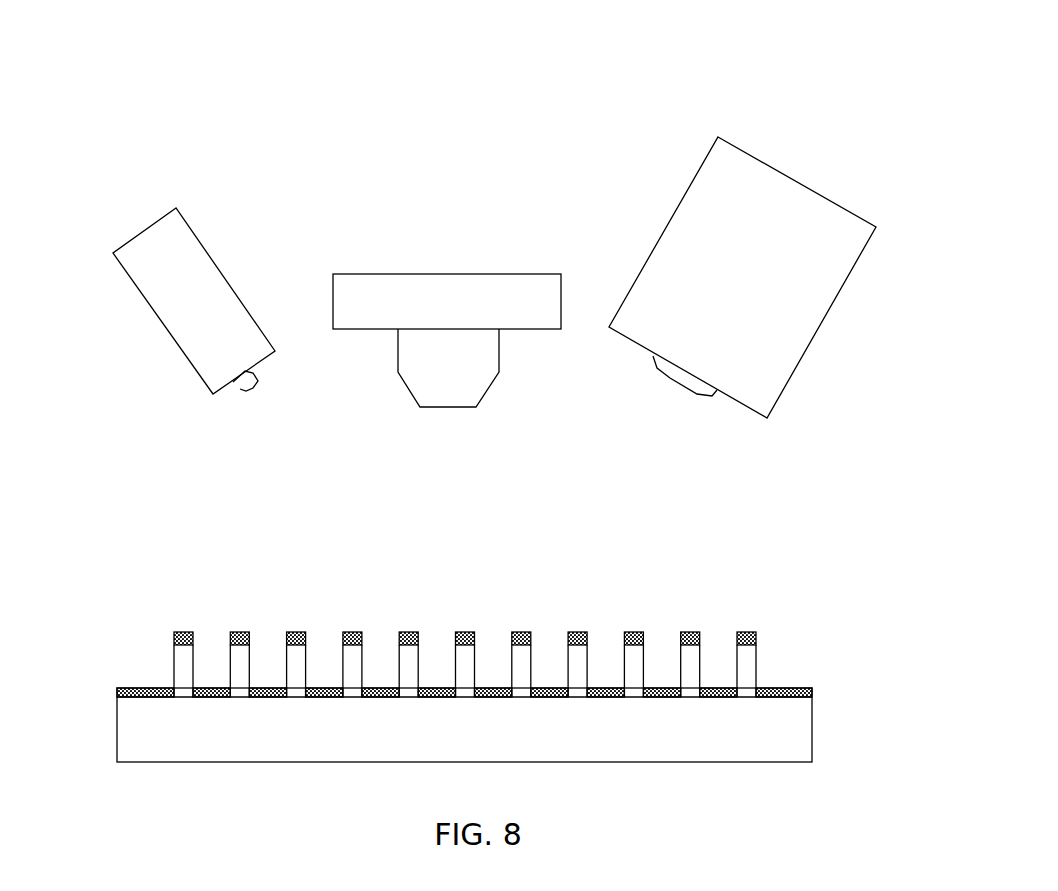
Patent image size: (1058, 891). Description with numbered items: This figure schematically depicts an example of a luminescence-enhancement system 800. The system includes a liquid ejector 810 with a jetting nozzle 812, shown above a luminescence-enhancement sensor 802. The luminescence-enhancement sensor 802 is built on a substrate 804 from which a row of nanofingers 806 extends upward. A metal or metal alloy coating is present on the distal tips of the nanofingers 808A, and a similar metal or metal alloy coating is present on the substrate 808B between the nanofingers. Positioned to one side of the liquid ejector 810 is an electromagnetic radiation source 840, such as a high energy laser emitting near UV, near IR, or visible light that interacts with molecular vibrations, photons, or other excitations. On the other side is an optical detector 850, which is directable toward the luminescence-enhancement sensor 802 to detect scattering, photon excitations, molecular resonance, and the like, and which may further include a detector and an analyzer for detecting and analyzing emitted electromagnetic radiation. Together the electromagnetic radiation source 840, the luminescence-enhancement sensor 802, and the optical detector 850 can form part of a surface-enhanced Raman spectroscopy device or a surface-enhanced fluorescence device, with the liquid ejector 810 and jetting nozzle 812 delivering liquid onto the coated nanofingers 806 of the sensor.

The luminescence-enhancement system 800 is at (260, 115).
The luminescence-enhancement sensor 802 is at (85, 692).
The substrate 804 is at (464, 725).
The nanofingers 806 is at (185, 677).
The metal or metal alloy coating on distal tips of the nanofingers 808A is at (248, 642).
The metal or metal alloy coating on the substrate 808B is at (812, 690).
The liquid ejector 810 is at (447, 301).
The jetting nozzle 812 is at (448, 368).
The electromagnetic radiation source 840 is at (194, 301).
The optical detector 850 is at (742, 277).